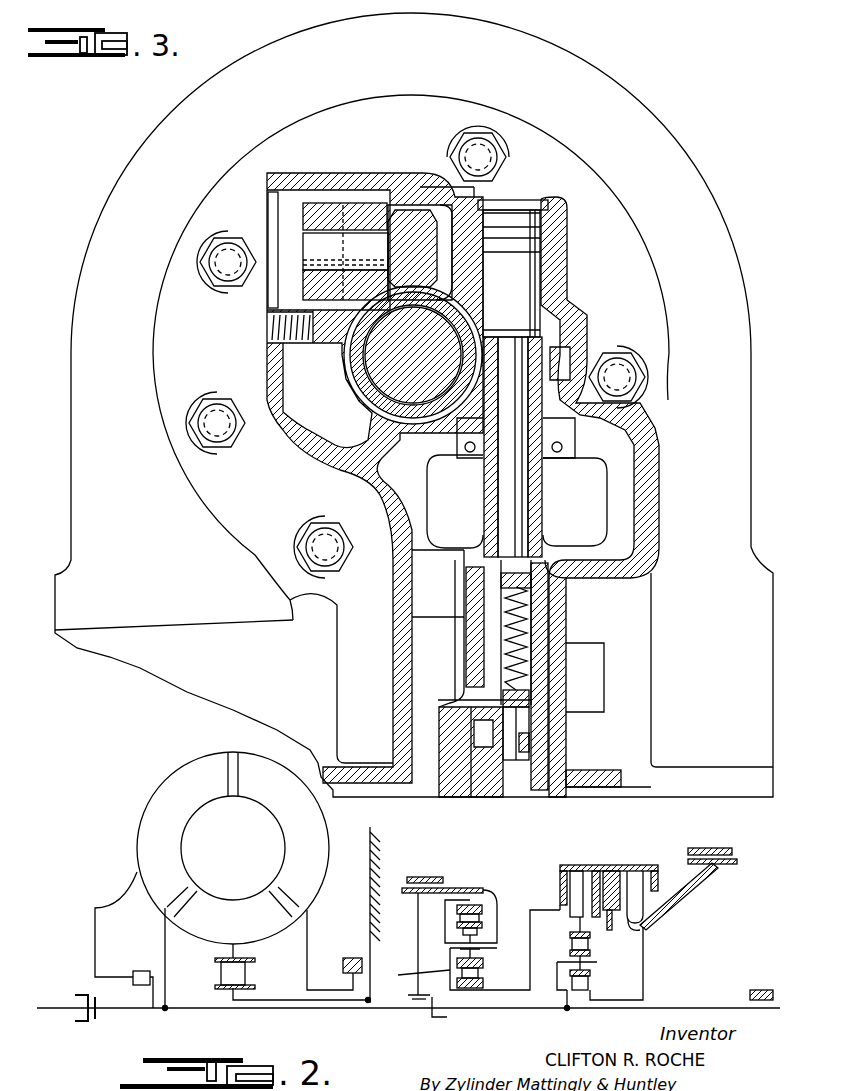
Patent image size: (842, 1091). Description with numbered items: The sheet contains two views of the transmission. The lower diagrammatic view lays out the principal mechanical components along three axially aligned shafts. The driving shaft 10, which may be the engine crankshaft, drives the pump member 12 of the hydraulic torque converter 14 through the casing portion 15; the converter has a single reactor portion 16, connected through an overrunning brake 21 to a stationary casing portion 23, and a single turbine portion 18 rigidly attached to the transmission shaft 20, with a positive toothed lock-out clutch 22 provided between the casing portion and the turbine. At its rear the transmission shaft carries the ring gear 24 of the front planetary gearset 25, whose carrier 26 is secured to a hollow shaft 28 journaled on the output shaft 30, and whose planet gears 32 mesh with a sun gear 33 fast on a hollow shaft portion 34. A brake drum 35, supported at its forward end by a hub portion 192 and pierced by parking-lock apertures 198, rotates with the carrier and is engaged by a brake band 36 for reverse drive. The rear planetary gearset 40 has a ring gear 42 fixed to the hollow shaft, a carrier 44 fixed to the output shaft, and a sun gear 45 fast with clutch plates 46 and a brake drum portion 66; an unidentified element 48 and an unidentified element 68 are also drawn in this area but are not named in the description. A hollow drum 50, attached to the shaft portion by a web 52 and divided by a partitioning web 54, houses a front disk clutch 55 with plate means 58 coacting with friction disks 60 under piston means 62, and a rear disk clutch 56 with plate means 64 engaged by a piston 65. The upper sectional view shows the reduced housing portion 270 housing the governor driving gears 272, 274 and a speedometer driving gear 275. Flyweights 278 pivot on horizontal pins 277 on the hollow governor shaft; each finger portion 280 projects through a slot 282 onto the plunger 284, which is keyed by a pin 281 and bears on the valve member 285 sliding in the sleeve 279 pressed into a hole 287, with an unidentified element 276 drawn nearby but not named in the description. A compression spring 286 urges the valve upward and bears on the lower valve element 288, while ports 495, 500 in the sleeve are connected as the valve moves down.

In FIG. 3, the reduced housing portion 270 is at (655, 485).
In FIG. 3, the governor driving gear 272 is at (400, 440).
In FIG. 3, the governor gear 274 is at (557, 345).
In FIG. 3, the speedometer driving gear 275 is at (412, 205).
In FIG. 3, the cavity 276 is at (445, 487).
In FIG. 3, the horizontal pin 277 is at (465, 447).
In FIG. 3, the flyweight 278 is at (641, 400).
In FIG. 3, the governor valve housing sleeve 279 is at (548, 632).
In FIG. 3, the finger portion 280 is at (560, 447).
In FIG. 3, the pin 281 is at (513, 447).
In FIG. 3, the slot 282 is at (570, 470).
In FIG. 3, the plunger 284 is at (530, 498).
In FIG. 3, the governor valve member 285 is at (548, 560).
In FIG. 3, the compression spring 286 is at (520, 620).
In FIG. 3, the hole 287 is at (468, 610).
In FIG. 3, the lower governor valve element 288 is at (525, 735).
In FIG. 3, the port 495 is at (464, 625).
In FIG. 3, the port 500 is at (487, 582).
In FIG. 2, the driving shaft 10 is at (60, 1000).
In FIG. 2, the pump member 12 is at (270, 770).
In FIG. 2, the hydraulic torque converter 14 is at (219, 753).
In FIG. 2, the casing portion 15 is at (160, 776).
In FIG. 2, the reactor portion 16 is at (232, 905).
In FIG. 2, the turbine portion 18 is at (178, 823).
In FIG. 2, the transmission shaft 20 is at (193, 1013).
In FIG. 2, the overrunning brake 21 is at (246, 975).
In FIG. 2, the lock-out clutch 22 is at (138, 962).
In FIG. 2, the stationary casing portion 23 is at (370, 895).
In FIG. 2, the front ring gear 24 is at (484, 895).
In FIG. 2, the front planetary gearset 25 is at (486, 905).
In FIG. 2, the front carrier 26 is at (416, 974).
In FIG. 2, the hollow shaft 28 is at (478, 1010).
In FIG. 2, the output shaft 30 is at (703, 1010).
In FIG. 2, the front planet gears 32 is at (483, 968).
In FIG. 2, the front sun gear 33 is at (484, 984).
In FIG. 2, the hollow shaft portion 34 is at (482, 950).
In FIG. 2, the brake drum 35 is at (450, 887).
In FIG. 2, the brake band 36 is at (418, 876).
In FIG. 2, the rear planetary gearset 40 is at (594, 1003).
In FIG. 2, the rear ring gear 42 is at (591, 943).
In FIG. 2, the rear carrier 44 is at (556, 997).
In FIG. 2, the rear sun gear 45 is at (560, 1012).
In FIG. 2, the clutch plates 46 is at (641, 930).
In FIG. 2, the relay 48 is at (591, 972).
In FIG. 2, the hollow drum 50 is at (570, 865).
In FIG. 2, the web 52 is at (497, 915).
In FIG. 2, the partitioning web 54 is at (615, 862).
In FIG. 2, the front disk clutch 55 is at (565, 848).
In FIG. 2, the rear disk clutch 56 is at (654, 855).
In FIG. 2, the plate means 58 is at (560, 875).
In FIG. 2, the friction disks 60 is at (550, 914).
In FIG. 2, the piston means 62 is at (597, 870).
In FIG. 2, the plate means 64 is at (663, 870).
In FIG. 2, the piston 65 is at (612, 873).
In FIG. 2, the brake drum portion 66 is at (738, 862).
In FIG. 2, the contact plate 68 is at (722, 848).
In FIG. 2, the hub portion 192 is at (418, 943).
In FIG. 2, the apertures 198 is at (470, 886).